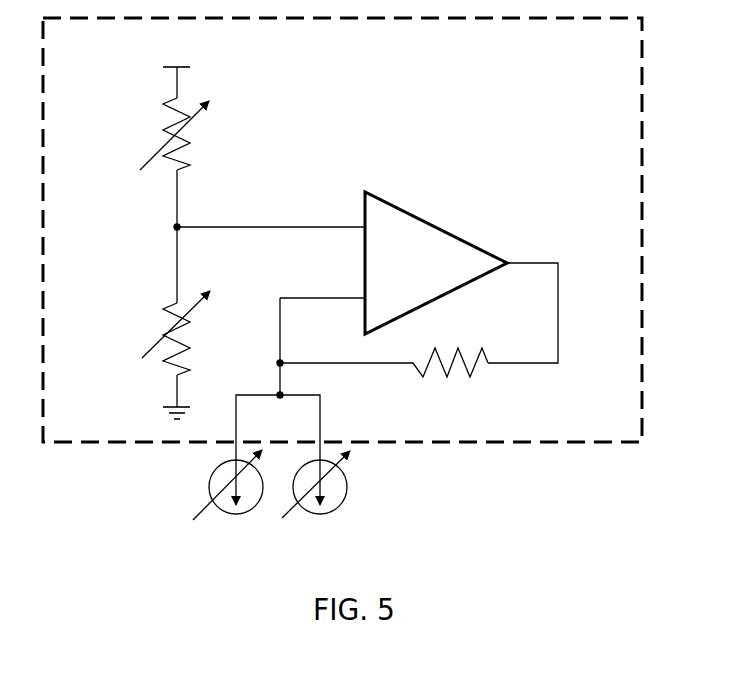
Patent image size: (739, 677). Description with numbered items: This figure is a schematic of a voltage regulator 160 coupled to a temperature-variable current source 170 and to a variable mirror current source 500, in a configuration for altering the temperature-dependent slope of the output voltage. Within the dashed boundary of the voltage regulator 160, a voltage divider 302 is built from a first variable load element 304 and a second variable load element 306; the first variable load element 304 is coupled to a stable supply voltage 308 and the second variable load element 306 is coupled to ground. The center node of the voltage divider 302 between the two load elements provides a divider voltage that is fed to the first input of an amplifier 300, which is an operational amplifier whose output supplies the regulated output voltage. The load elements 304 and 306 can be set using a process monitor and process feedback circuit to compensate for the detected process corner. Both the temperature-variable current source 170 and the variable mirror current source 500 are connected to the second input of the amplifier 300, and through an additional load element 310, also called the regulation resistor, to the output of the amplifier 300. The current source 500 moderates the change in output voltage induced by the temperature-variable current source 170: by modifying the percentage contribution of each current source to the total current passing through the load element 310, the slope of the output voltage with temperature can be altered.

The voltage regulator 160 is at (607, 428).
The amplifier 300 is at (422, 218).
The voltage divider 302 is at (120, 214).
The first variable load element 304 is at (167, 102).
The second variable load element 306 is at (167, 305).
The stable supply voltage 308 is at (201, 59).
The load element 310 is at (462, 347).
The variable mirror current source 500 is at (215, 508).
The temperature-variable current source 170 is at (328, 512).